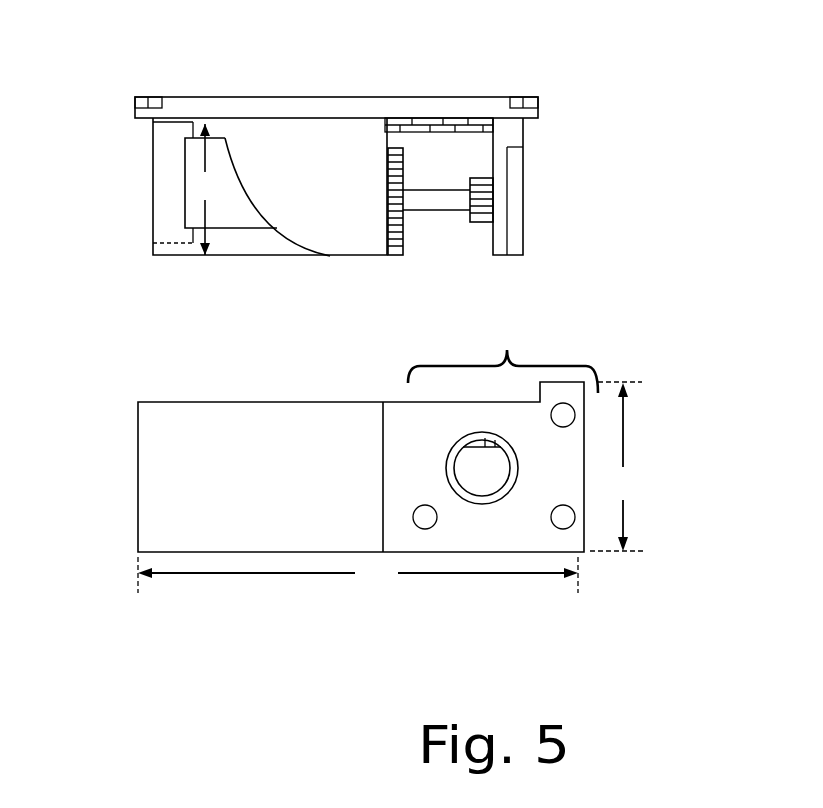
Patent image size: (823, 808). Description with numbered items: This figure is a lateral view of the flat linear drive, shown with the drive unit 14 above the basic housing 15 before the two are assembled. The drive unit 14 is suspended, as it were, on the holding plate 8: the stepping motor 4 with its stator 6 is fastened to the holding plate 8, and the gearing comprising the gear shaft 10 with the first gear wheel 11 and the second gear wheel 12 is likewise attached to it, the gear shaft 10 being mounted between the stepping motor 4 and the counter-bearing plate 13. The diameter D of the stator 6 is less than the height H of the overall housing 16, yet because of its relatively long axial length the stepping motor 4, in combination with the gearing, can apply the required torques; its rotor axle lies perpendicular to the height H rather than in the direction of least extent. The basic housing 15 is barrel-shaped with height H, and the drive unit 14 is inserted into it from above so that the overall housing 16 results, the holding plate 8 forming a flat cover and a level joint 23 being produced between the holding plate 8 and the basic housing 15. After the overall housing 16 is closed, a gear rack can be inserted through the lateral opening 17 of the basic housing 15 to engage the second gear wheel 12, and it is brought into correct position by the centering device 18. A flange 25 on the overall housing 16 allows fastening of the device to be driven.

The stepping motor 4 is at (231, 212).
The stator 6 is at (276, 243).
The holding plate 8 is at (473, 105).
The gear shaft 10 is at (438, 208).
The first gear wheel 11 is at (397, 148).
The second gear wheel 12 is at (478, 178).
The counter-bearing plate 13 is at (563, 186).
The drive unit 14 is at (604, 173).
The basic housing 15 is at (288, 528).
The overall housing 16 is at (353, 362).
The lateral opening 17 is at (482, 470).
The centering device 18 is at (517, 472).
The level joint 23 is at (136, 126).
The flange 25 is at (503, 345).